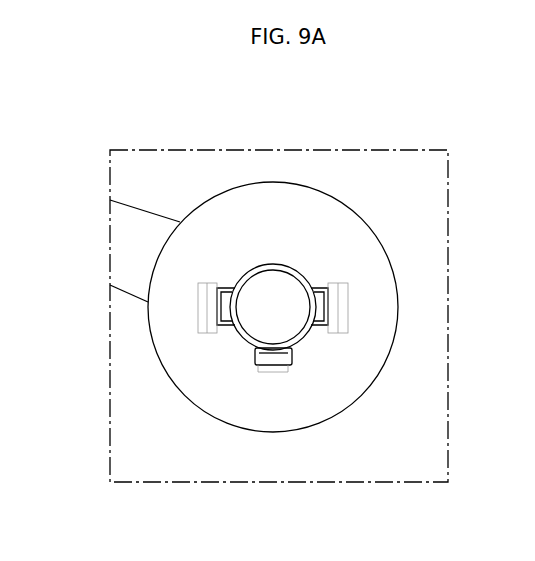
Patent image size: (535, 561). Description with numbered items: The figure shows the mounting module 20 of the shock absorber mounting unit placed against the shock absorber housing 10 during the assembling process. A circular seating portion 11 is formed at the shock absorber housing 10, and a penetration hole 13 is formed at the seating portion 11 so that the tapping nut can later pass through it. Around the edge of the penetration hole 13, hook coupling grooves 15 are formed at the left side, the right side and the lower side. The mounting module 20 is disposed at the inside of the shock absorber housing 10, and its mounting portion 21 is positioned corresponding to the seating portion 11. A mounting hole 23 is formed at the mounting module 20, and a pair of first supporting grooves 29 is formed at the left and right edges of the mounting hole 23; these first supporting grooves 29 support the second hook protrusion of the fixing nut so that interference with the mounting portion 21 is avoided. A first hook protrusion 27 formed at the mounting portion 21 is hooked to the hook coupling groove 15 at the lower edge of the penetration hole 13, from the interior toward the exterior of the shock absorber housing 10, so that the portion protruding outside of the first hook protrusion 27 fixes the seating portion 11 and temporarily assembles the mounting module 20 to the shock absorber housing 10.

The shock absorber housing 10 is at (102, 368).
The seating portion 11 is at (220, 398).
The penetration hole 13 is at (296, 285).
The hook coupling groove 15 is at (222, 349).
The mounting module 20 is at (377, 221).
The mounting portion 21 is at (378, 267).
The mounting hole 23 is at (237, 306).
The first hook protrusion 27 is at (275, 363).
The first supporting groove 29 is at (195, 302).